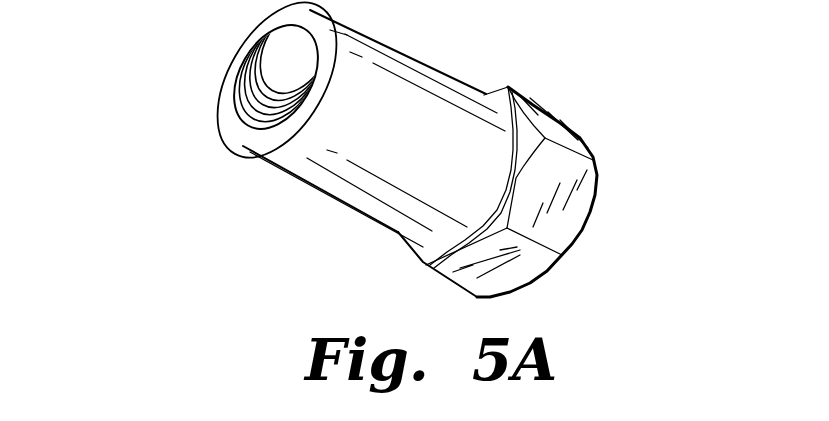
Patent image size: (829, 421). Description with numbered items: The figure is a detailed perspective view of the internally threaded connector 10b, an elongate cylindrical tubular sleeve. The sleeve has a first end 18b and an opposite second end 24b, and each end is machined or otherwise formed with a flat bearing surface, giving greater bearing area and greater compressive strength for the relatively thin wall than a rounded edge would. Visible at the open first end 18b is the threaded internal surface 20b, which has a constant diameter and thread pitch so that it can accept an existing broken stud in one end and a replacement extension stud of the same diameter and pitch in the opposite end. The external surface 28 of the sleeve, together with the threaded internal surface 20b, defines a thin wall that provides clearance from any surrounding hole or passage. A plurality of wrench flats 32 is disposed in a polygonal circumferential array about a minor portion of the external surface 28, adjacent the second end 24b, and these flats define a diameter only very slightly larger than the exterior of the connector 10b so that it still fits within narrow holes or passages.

The internally threaded connector 10b is at (170, 261).
The first end 18b is at (226, 109).
The threaded internal surface 20b is at (253, 62).
The external surface 28 is at (361, 178).
The second end 24b is at (587, 225).
The wrench flats 32 is at (593, 168).